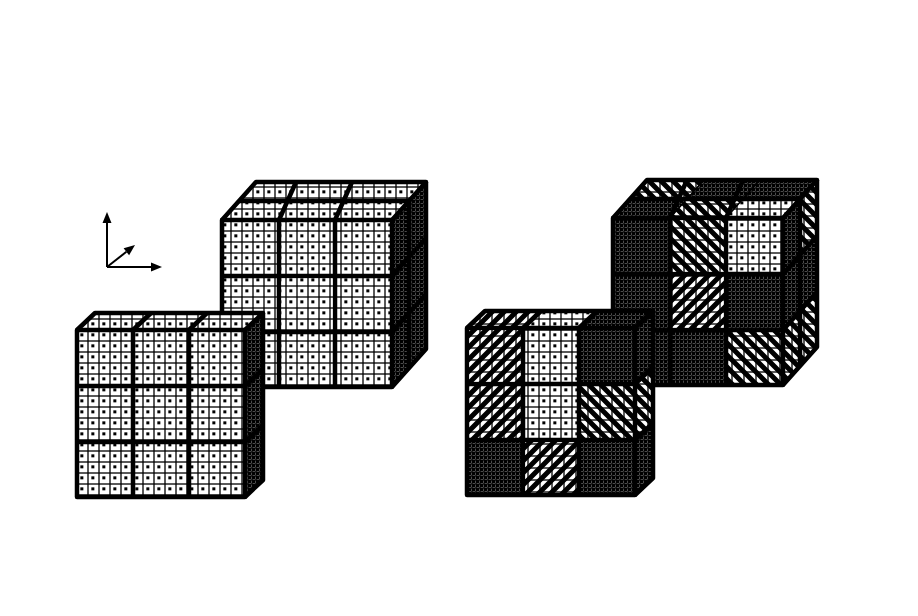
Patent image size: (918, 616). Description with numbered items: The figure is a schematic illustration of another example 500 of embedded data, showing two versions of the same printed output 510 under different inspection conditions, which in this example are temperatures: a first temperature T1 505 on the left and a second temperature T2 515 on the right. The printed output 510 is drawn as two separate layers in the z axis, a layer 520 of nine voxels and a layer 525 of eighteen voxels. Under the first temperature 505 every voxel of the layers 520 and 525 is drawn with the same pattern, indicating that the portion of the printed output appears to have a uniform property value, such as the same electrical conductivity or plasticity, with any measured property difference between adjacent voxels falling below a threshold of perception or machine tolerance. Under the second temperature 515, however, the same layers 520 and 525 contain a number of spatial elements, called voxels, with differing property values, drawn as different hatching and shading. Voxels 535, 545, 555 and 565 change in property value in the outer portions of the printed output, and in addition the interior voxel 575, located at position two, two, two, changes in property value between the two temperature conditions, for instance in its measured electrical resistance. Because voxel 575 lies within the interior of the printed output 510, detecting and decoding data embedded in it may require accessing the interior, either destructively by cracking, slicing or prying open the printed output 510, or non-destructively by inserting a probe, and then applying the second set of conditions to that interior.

The example of embedded data 500 is at (160, 41).
The first temperature T1 505 is at (312, 82).
The printed output 510 is at (175, 204).
The second temperature T2 515 is at (713, 83).
The layer of nine voxels 520 is at (428, 181).
The layer of eighteen voxels 525 is at (87, 503).
The voxel 535 is at (555, 415).
The voxel 545 is at (494, 348).
The voxel 555 is at (617, 465).
The voxel 565 is at (693, 253).
The interior voxel (2,2,2) 575 is at (303, 303).